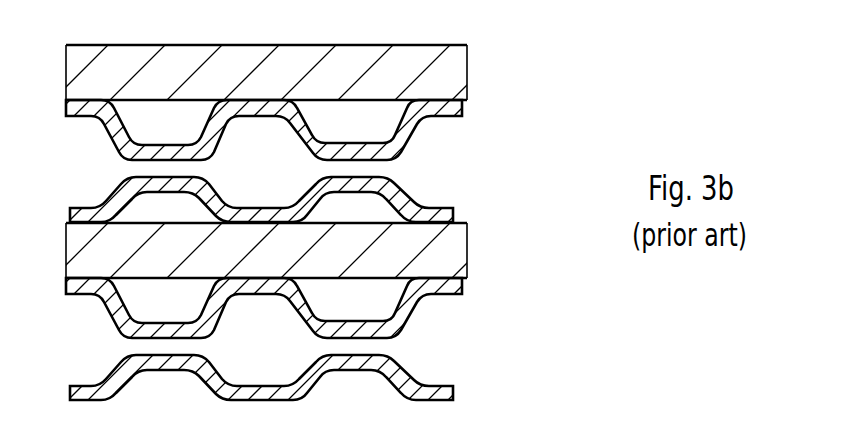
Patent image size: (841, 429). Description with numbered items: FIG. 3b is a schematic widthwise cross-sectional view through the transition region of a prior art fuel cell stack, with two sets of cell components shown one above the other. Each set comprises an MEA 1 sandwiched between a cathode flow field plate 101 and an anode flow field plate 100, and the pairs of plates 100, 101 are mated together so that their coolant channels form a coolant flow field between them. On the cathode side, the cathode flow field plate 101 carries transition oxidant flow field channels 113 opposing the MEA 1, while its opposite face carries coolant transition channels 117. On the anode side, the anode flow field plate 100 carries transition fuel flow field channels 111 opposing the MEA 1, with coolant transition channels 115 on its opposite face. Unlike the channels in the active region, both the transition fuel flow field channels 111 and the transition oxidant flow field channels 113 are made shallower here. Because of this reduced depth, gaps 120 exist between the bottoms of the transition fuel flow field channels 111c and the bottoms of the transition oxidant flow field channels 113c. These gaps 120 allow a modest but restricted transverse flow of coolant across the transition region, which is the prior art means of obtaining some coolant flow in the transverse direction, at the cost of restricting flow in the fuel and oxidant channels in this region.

The MEA 1 is at (452, 63).
The cathode flow field plate 101 is at (447, 110).
The anode flow field plate 100 is at (437, 213).
The bottom of transition oxidant flow field channel 113c is at (162, 147).
The gap 120 is at (160, 170).
The bottom of transition fuel flow field channel 111c is at (160, 187).
The coolant transition channel 117 is at (278, 147).
The transition oxidant flow field channel 113 is at (372, 133).
The coolant transition channel 115 is at (278, 198).
The transition fuel flow field channel 111 is at (360, 208).